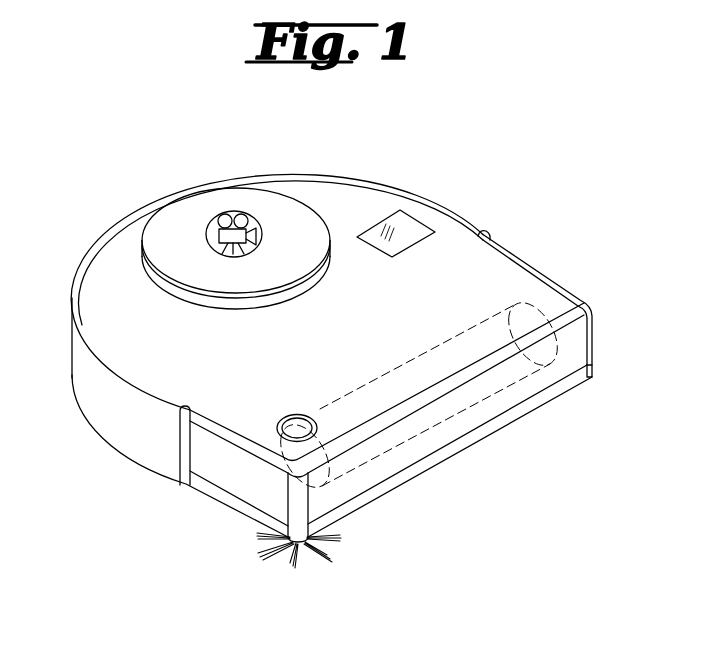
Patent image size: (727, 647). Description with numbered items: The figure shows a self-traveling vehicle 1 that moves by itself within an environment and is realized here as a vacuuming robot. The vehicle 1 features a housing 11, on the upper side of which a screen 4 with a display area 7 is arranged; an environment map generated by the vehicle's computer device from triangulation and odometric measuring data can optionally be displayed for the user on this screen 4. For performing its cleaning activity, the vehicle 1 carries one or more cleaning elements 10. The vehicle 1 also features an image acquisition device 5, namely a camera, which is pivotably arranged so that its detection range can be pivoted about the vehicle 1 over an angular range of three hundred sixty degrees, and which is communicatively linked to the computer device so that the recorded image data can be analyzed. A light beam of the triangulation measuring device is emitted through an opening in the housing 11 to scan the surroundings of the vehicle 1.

The vehicle 1 is at (544, 178).
The screen 4 is at (408, 213).
The image acquisition device 5 is at (213, 236).
The display area 7 is at (380, 232).
The cleaning elements 10 is at (437, 432).
The housing 11 is at (147, 413).